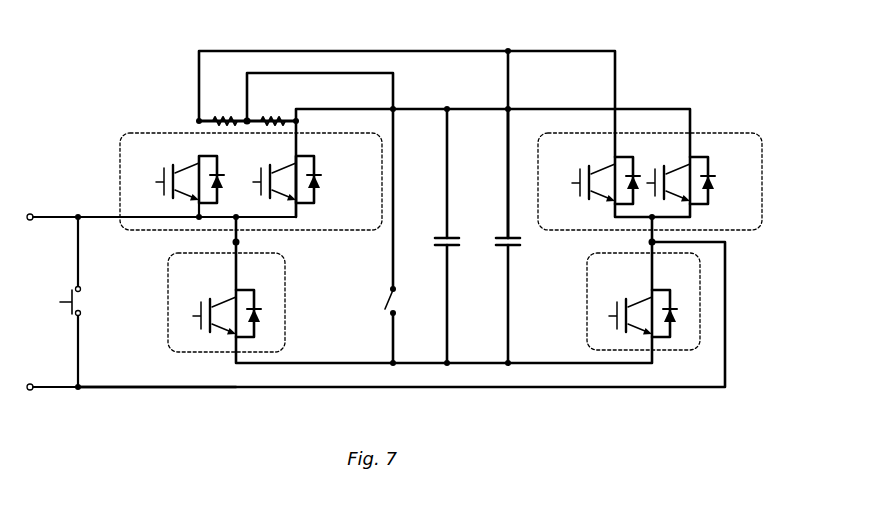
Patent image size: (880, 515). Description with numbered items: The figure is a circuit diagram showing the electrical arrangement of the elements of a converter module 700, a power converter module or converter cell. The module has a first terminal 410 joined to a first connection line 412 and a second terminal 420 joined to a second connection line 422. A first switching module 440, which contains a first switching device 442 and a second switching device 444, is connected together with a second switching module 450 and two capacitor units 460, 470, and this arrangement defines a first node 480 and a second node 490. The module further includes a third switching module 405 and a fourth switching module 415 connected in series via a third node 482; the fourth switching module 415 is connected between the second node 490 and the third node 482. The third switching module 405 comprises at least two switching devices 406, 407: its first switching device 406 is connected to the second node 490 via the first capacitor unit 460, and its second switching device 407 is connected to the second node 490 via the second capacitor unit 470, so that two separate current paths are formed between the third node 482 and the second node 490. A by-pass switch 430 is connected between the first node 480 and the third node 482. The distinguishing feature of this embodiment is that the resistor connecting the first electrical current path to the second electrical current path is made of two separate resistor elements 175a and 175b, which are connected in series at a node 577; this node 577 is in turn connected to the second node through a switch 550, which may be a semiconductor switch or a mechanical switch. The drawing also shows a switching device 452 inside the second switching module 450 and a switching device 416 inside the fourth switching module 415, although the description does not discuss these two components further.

The converter module 700 is at (70, 76).
The resistor element 175a is at (214, 118).
The resistor element 175b is at (271, 118).
The node 577 is at (246, 118).
The first terminal 410 is at (76, 220).
The first connection line 412 is at (102, 220).
The second terminal 420 is at (76, 390).
The second connection line 422 is at (128, 390).
The by-pass switch 430 is at (60, 315).
The first switching module 440 is at (119, 150).
The first switching device 442 is at (164, 171).
The second switching device 444 is at (330, 171).
The third switching module 405 is at (708, 132).
The first switching device of the third switching module 406 is at (581, 171).
The second switching device of the third switching module 407 is at (723, 172).
The second switching module 450 is at (286, 311).
The fifth switch 452 is at (221, 292).
The first node 480 is at (238, 242).
The third node 482 is at (650, 243).
The fourth switching module 415 is at (587, 311).
The sixth switch 416 is at (640, 293).
The switch 550 is at (386, 307).
The first capacitor unit 460 is at (506, 236).
The second capacitor unit 470 is at (442, 250).
The second node 490 is at (478, 361).